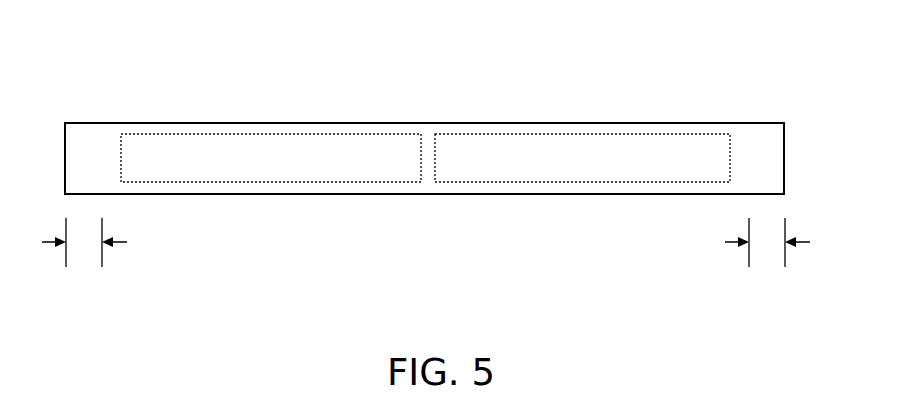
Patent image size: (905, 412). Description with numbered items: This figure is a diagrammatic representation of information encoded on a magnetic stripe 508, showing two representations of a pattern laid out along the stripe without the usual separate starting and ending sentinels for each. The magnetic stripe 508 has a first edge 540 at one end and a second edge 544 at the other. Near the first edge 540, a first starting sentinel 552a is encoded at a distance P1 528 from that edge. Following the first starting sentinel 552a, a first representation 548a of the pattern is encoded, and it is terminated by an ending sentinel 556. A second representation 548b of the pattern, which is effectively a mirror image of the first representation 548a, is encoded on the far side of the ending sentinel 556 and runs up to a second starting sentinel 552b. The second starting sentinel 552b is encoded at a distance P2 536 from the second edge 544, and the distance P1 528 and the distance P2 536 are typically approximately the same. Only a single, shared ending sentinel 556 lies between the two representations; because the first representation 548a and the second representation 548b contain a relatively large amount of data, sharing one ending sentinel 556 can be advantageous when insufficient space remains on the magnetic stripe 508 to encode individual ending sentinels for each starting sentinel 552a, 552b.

The magnetic stripe 508 is at (98, 47).
The first edge 540 is at (66, 149).
The second edge 544 is at (784, 155).
The first representation 548a is at (257, 134).
The second representation 548b is at (712, 134).
The first starting sentinel 552a is at (108, 172).
The second starting sentinel 552b is at (742, 175).
The ending sentinel 556 is at (428, 172).
The distance P1 528 is at (65, 305).
The distance P2 536 is at (749, 305).